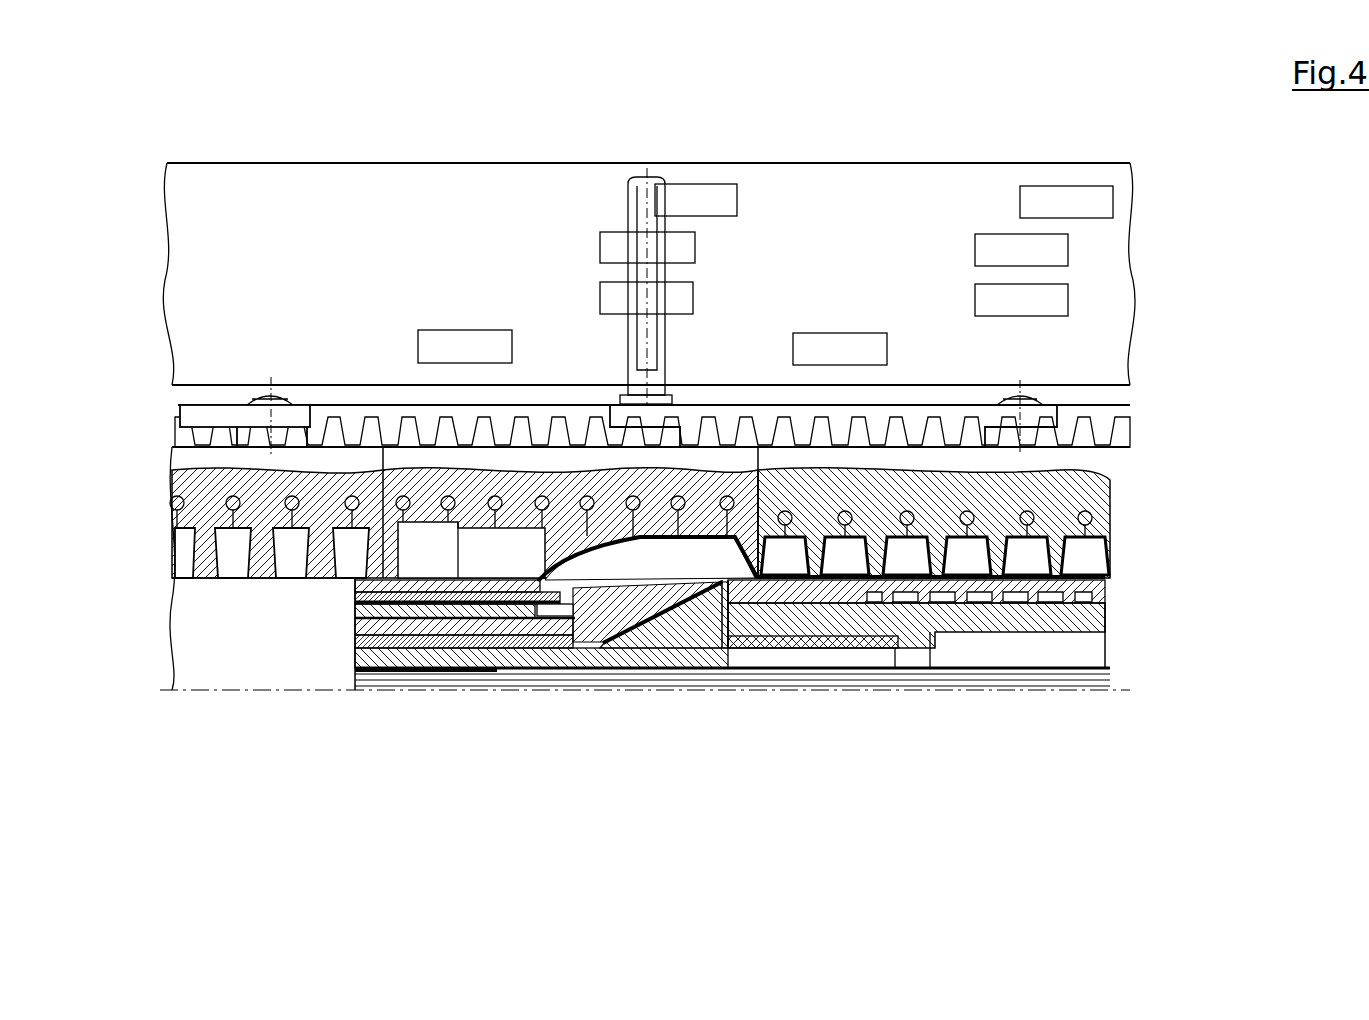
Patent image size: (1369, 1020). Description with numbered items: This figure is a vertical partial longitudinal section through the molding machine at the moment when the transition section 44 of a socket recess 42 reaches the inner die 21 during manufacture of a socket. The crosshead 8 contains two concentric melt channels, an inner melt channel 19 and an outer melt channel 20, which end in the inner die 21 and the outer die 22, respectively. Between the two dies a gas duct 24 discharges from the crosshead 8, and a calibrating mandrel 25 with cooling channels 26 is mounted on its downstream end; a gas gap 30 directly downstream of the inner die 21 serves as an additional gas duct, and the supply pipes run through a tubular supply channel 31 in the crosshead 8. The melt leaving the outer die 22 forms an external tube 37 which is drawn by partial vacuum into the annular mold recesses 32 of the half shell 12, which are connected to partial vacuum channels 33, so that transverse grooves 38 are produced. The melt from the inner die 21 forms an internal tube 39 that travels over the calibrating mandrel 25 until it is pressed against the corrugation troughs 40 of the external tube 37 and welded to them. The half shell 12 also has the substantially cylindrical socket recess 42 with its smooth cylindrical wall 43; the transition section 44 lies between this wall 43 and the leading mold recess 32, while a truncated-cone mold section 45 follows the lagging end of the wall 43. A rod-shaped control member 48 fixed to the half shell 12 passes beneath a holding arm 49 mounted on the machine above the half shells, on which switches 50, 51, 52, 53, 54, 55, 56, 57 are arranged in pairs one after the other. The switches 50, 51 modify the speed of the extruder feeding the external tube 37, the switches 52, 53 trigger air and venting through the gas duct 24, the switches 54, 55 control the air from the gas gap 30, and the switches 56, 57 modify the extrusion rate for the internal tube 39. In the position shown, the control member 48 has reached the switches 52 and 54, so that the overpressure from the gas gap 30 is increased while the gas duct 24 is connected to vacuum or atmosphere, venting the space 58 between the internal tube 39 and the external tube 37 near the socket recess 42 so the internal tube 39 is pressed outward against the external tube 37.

The crosshead 8 is at (393, 704).
The half shell 12 is at (212, 462).
The inner melt channel 19 is at (353, 645).
The outer melt channel 20 is at (353, 600).
The inner die 21 is at (722, 602).
The outer die 22 is at (548, 600).
The gas duct 24 is at (598, 622).
The calibrating mandrel 25 is at (1035, 640).
The cooling channels 26 is at (1100, 640).
The gas gap 30 is at (750, 642).
The supply channel 31 is at (995, 655).
The mold recess 32 is at (232, 566).
The partial vacuum channel 33 is at (228, 512).
The external tube 37 is at (1100, 562).
The transverse grooves 38 is at (1095, 542).
The internal tube 39 is at (1100, 590).
The corrugation troughs 40 is at (1053, 547).
The socket recess 42 is at (471, 567).
The wall of the socket recess 43 is at (565, 543).
The transition section 44 is at (870, 650).
The mold section 45 is at (463, 598).
The control member 48 is at (636, 348).
The holding arm 49 is at (338, 235).
The switch 50 is at (447, 343).
The switch 51 is at (873, 353).
The switch 52 is at (680, 305).
The switch 53 is at (992, 294).
The switch 54 is at (612, 252).
The switch 55 is at (993, 252).
The switch 56 is at (720, 208).
The switch 57 is at (1040, 206).
The space 58 is at (656, 579).